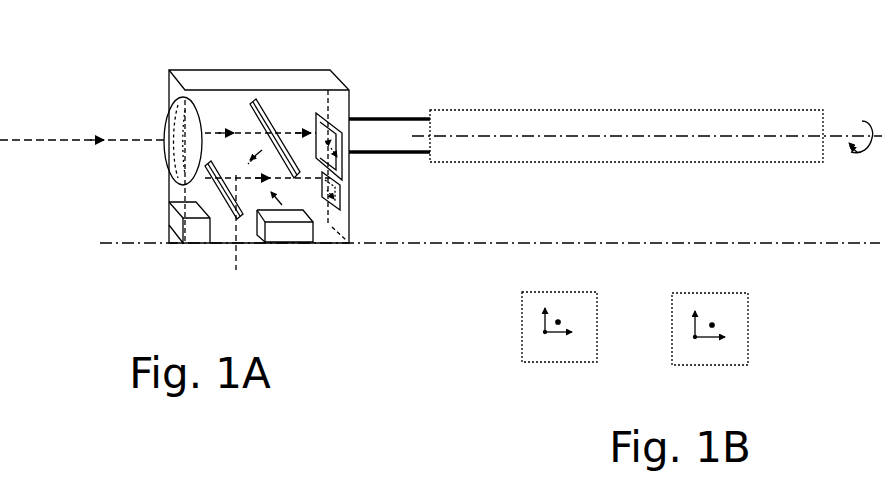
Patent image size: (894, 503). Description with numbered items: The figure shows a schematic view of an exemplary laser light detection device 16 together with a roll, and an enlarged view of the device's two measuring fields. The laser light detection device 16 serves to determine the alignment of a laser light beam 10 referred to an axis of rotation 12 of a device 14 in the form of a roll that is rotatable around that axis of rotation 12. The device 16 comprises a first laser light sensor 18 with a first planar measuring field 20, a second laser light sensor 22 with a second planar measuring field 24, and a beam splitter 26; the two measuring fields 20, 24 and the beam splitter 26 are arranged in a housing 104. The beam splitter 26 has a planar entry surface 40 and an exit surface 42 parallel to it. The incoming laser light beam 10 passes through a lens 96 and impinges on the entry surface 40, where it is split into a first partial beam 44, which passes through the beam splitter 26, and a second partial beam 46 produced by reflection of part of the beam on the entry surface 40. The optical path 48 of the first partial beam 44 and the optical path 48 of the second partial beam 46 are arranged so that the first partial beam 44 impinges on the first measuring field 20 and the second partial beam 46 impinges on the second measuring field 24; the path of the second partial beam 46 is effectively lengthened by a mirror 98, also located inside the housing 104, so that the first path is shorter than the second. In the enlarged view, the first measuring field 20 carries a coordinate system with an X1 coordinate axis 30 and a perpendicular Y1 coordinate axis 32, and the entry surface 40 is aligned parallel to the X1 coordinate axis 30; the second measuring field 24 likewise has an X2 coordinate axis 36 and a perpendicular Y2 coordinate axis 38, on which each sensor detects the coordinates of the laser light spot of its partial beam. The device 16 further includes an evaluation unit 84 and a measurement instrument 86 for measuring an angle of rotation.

In FIG. 1A, the laser light beam 10 is at (45, 139).
In FIG. 1A, the housing 104 is at (176, 90).
In FIG. 1A, the lens 96 is at (175, 158).
In FIG. 1A, the laser light detection device 16 is at (135, 183).
In FIG. 1A, the entry surface 40 is at (250, 110).
In FIG. 1A, the beam splitter 26 is at (280, 130).
In FIG. 1A, the exit surface 42 is at (298, 115).
In FIG. 1A, the first partial beam 44 is at (330, 70).
In FIG. 1A, the optical path 48 is at (322, 126).
In FIG. 1A, the second partial beam 46 is at (232, 163).
In FIG. 1A, the mirror 98 is at (222, 204).
In FIG. 1A, the first laser light sensor 18 is at (343, 114).
In FIG. 1B, the first laser light sensor 18 is at (512, 322).
In FIG. 1A, the first planar measuring field 20 is at (343, 164).
In FIG. 1B, the first planar measuring field 20 is at (530, 355).
In FIG. 1A, the second laser light sensor 22 is at (350, 210).
In FIG. 1B, the second laser light sensor 22 is at (764, 333).
In FIG. 1A, the second planar measuring field 24 is at (347, 191).
In FIG. 1B, the second planar measuring field 24 is at (679, 304).
In FIG. 1A, the measurement instrument 86 is at (186, 237).
In FIG. 1A, the evaluation unit 84 is at (302, 234).
In FIG. 1A, the axis of rotation 12 is at (478, 138).
In FIG. 1A, the device in the form of a roll 14 is at (558, 123).
In FIG. 1B, the Y1 coordinate axis 32 is at (555, 308).
In FIG. 1B, the X1 coordinate axis 30 is at (576, 328).
In FIG. 1B, the Y2 coordinate axis 38 is at (702, 310).
In FIG. 1B, the X2 coordinate axis 36 is at (697, 340).